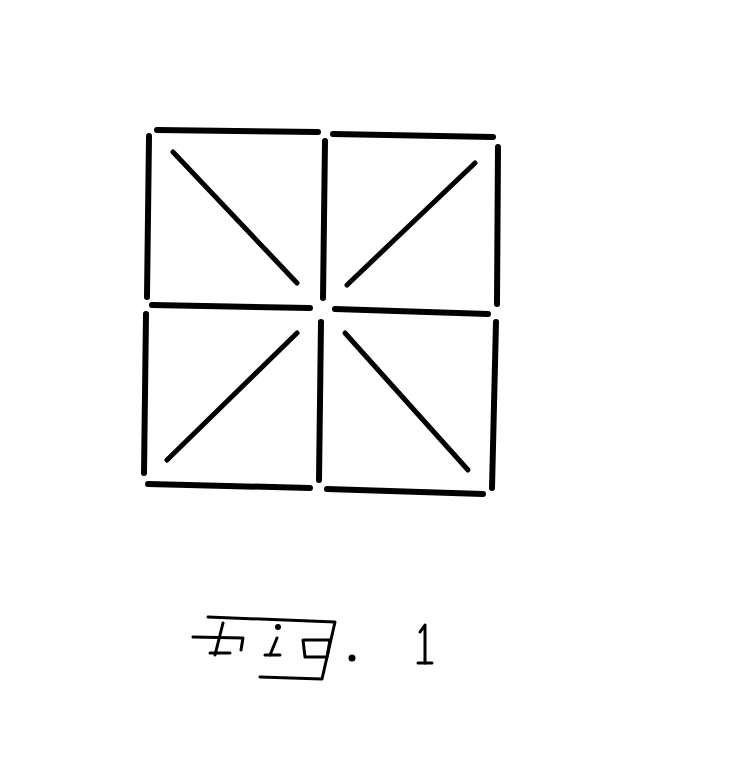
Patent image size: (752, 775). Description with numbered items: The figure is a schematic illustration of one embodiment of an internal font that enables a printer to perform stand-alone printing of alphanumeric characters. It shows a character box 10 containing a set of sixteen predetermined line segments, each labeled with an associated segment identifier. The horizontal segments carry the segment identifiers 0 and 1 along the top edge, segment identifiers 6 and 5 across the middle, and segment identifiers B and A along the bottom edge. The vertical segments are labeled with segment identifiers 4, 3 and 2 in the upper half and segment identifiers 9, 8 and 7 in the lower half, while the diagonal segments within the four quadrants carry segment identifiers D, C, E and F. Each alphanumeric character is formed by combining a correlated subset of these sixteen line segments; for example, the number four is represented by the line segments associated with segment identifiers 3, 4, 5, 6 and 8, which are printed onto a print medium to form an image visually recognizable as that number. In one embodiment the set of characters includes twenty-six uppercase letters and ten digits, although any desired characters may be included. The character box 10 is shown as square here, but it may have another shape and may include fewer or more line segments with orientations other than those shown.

The character box 10 is at (518, 126).
The segment identifier 0 is at (237, 128).
The segment identifier 1 is at (402, 133).
The segment identifier 2 is at (498, 207).
The segment identifier 3 is at (323, 185).
The segment identifier 4 is at (147, 193).
The segment identifier 5 is at (410, 309).
The segment identifier 6 is at (223, 310).
The segment identifier 7 is at (496, 393).
The segment identifier 8 is at (322, 390).
The segment identifier 9 is at (146, 375).
The segment identifier A is at (405, 494).
The segment identifier B is at (229, 489).
The segment identifier C is at (439, 192).
The segment identifier D is at (217, 190).
The segment identifier E is at (203, 428).
The segment identifier F is at (437, 440).